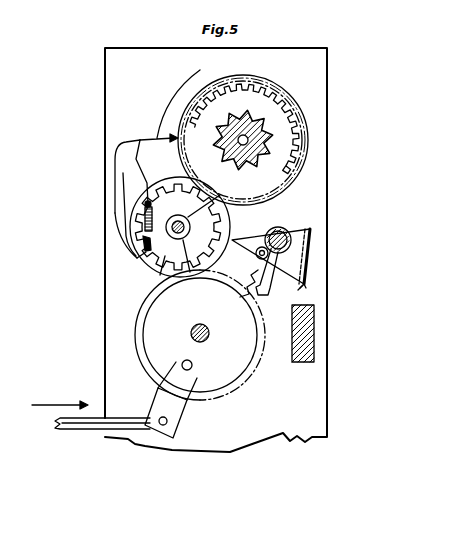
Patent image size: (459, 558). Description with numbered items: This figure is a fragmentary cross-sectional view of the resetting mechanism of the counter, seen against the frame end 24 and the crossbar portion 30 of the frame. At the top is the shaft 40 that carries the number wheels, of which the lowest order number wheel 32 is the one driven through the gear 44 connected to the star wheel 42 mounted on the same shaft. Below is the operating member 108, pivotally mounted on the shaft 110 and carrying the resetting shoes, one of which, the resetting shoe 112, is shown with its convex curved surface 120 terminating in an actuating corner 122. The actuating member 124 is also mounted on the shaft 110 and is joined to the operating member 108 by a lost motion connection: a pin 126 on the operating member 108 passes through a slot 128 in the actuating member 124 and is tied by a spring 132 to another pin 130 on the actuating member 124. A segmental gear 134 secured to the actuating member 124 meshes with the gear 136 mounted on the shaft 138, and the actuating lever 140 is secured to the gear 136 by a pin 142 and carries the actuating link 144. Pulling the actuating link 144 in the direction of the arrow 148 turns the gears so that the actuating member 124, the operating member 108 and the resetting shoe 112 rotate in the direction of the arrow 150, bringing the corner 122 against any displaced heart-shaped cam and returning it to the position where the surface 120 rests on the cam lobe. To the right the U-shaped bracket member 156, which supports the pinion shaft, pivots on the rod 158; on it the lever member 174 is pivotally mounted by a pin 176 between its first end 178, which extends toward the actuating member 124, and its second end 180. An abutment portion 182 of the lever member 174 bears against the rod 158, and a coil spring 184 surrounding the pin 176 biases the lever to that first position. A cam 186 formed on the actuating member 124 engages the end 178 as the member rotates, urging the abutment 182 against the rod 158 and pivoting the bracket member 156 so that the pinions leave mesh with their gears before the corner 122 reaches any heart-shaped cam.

The frame end 24 is at (325, 392).
The crossbar portion 30 is at (316, 337).
The lowest order number wheel 32 is at (307, 156).
The shaft 40 is at (248, 120).
The star wheel 42 is at (273, 130).
The gear 44 is at (273, 108).
The operating member 108 is at (120, 247).
The shaft 110 is at (178, 216).
The resetting shoe 112 is at (125, 172).
The curved surface 120 is at (124, 136).
The actuating corner 122 is at (143, 140).
The actuating member 124 is at (163, 180).
The pin 126 is at (135, 247).
The slot 128 is at (145, 255).
The pin 130 is at (142, 203).
The spring 132 is at (142, 218).
The segmental gear 134 is at (165, 272).
The gear 136 is at (230, 383).
The shaft 138 is at (208, 328).
The actuating lever 140 is at (191, 442).
The pin 142 is at (191, 363).
The actuating link 144 is at (85, 432).
The arrow 148 is at (52, 403).
The arrow 150 is at (181, 98).
The U-shaped bracket member 156 is at (307, 260).
The rod 158 is at (293, 240).
The lever member 174 is at (305, 287).
The pin 176 is at (310, 226).
The first end 178 is at (266, 228).
The second end 180 is at (266, 297).
The abutment portion 182 is at (303, 275).
The coil spring 184 is at (238, 276).
The cam 186 is at (228, 188).